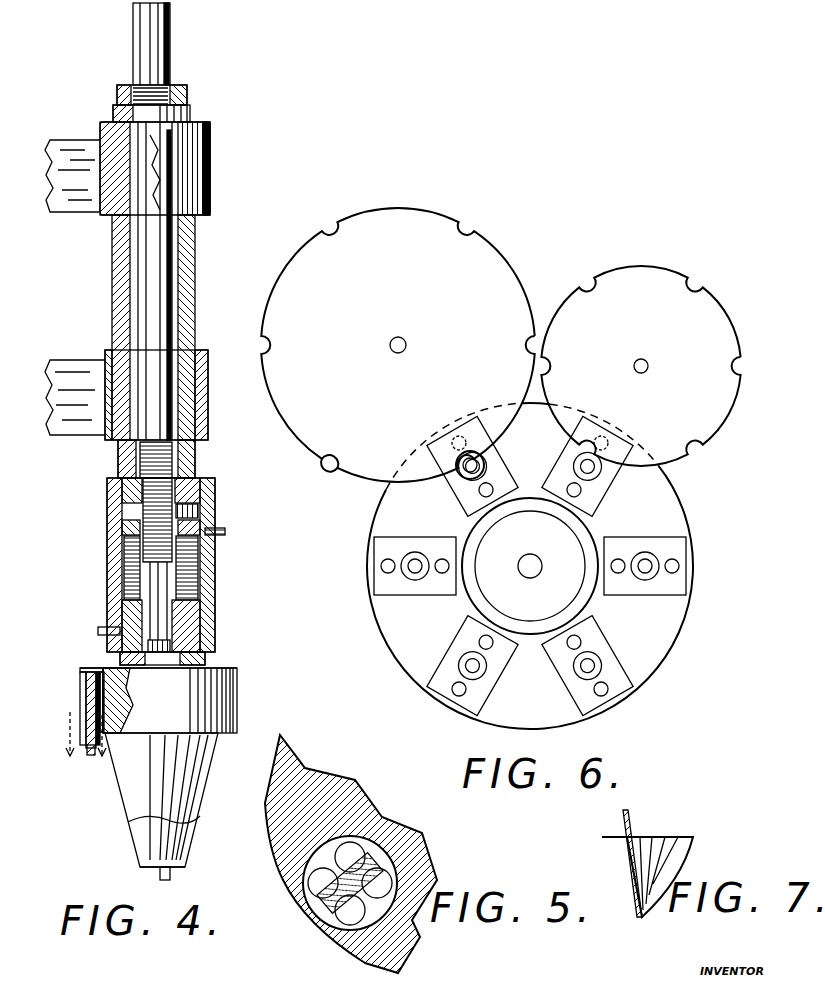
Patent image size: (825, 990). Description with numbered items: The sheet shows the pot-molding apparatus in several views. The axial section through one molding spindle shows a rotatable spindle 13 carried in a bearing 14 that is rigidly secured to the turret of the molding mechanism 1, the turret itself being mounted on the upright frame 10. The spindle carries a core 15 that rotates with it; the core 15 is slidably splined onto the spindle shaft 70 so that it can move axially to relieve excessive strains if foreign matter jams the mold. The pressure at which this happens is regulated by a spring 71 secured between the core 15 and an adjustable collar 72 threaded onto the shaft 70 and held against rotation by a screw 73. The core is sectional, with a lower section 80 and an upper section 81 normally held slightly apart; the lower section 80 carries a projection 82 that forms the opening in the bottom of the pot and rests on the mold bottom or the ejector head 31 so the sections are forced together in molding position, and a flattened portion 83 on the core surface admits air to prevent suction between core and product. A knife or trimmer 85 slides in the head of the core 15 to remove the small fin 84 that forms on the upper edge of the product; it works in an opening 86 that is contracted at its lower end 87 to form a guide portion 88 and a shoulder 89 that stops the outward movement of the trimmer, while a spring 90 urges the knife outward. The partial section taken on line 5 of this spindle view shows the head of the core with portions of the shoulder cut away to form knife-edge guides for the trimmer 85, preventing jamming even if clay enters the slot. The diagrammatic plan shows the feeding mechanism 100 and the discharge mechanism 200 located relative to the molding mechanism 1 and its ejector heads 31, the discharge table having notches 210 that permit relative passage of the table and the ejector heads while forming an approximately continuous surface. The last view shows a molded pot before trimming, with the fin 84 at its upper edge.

In FIG. 6, the molding mechanism 1 is at (660, 645).
In FIG. 4, the section line 5— 5 is at (85, 746).
In FIG. 4, the upright frame 10 is at (174, 73).
In FIG. 4, the spindle 13 is at (214, 592).
In FIG. 4, the bearing 14 is at (207, 162).
In FIG. 4, the core 15 is at (236, 671).
In FIG. 5, the core 15 is at (382, 956).
In FIG. 6, the ejector head 31 is at (466, 473).
In FIG. 4, the spindle shaft 70 is at (162, 628).
In FIG. 4, the spring 71 is at (199, 572).
In FIG. 4, the adjustable collar 72 is at (199, 522).
In FIG. 4, the screw 73 is at (225, 534).
In FIG. 4, the lower section 80 is at (190, 840).
In FIG. 4, the upper section 81 is at (212, 793).
In FIG. 4, the projection 82 is at (172, 876).
In FIG. 4, the flattened portion 83 is at (160, 830).
In FIG. 7, the fin 84 is at (612, 842).
In FIG. 4, the knife or trimmer 85 is at (94, 754).
In FIG. 5, the knife or trimmer 85 is at (346, 922).
In FIG. 7, the knife or trimmer 85 is at (631, 821).
In FIG. 4, the opening 86 is at (85, 682).
In FIG. 4, the contracted lower end 87 is at (90, 722).
In FIG. 4, the guide portion 88 is at (88, 737).
In FIG. 4, the shoulder 89 is at (80, 702).
In FIG. 5, the shoulder 89 is at (330, 905).
In FIG. 4, the spring 90 is at (84, 669).
In FIG. 6, the feeding mechanism 100 is at (628, 264).
In FIG. 6, the discharge mechanism 200 is at (400, 212).
In FIG. 6, the notch 210 is at (327, 470).